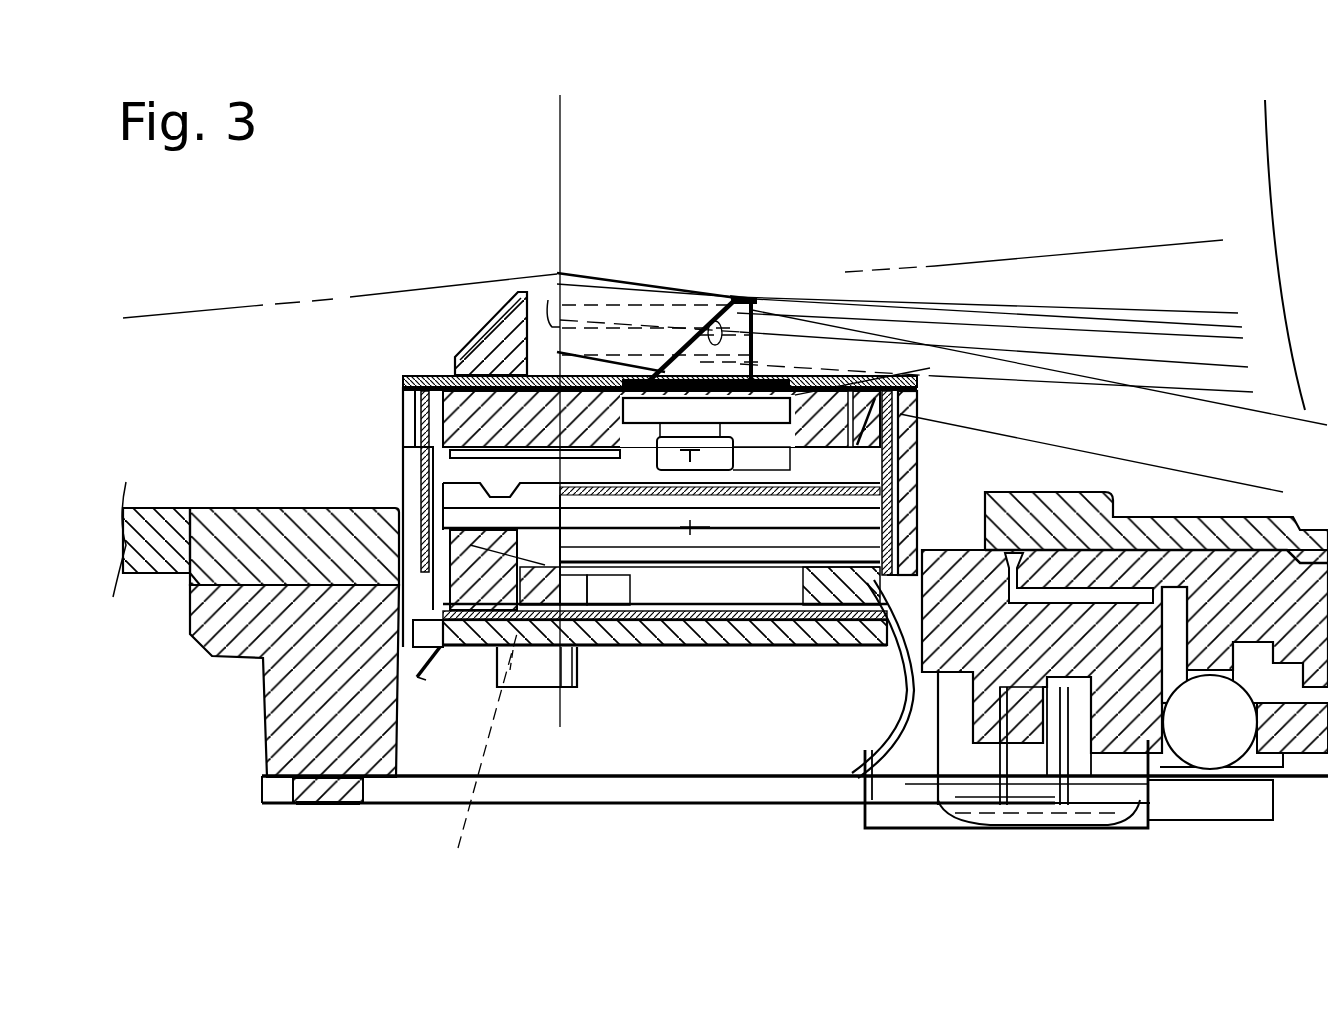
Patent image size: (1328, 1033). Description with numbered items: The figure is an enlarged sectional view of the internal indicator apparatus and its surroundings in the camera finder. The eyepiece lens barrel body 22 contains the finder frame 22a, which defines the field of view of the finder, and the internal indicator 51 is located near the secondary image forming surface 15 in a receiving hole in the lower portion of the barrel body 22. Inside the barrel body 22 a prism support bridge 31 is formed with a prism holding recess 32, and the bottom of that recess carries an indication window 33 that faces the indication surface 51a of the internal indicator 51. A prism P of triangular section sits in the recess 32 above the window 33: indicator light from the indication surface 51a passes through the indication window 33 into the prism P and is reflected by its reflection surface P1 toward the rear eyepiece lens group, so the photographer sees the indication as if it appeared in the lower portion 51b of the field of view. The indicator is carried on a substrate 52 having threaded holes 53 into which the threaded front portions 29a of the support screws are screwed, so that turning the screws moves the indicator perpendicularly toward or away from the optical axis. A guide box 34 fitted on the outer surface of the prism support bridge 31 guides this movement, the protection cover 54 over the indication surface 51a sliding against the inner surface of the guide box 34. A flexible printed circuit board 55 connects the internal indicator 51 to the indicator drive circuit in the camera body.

The secondary image forming surface 15 is at (553, 196).
The eyepiece lens barrel body 22 is at (378, 753).
The finder frame 22a is at (513, 300).
The threaded front portion 29a is at (537, 673).
The prism support bridge 31 is at (450, 405).
The prism holding recess 32 is at (782, 455).
The indication window 33 is at (678, 385).
The guide box 34 is at (420, 480).
The internal indicator 51 is at (693, 520).
The indication surface 51a is at (770, 480).
The lower portion of the field of view 51b is at (550, 320).
The substrate 52 is at (763, 617).
The threaded hole 53 is at (481, 761).
The protection cover 54 is at (435, 662).
The flexible printed circuit board 55 is at (890, 712).
The prism P is at (738, 294).
The reflection surface P1 is at (716, 340).